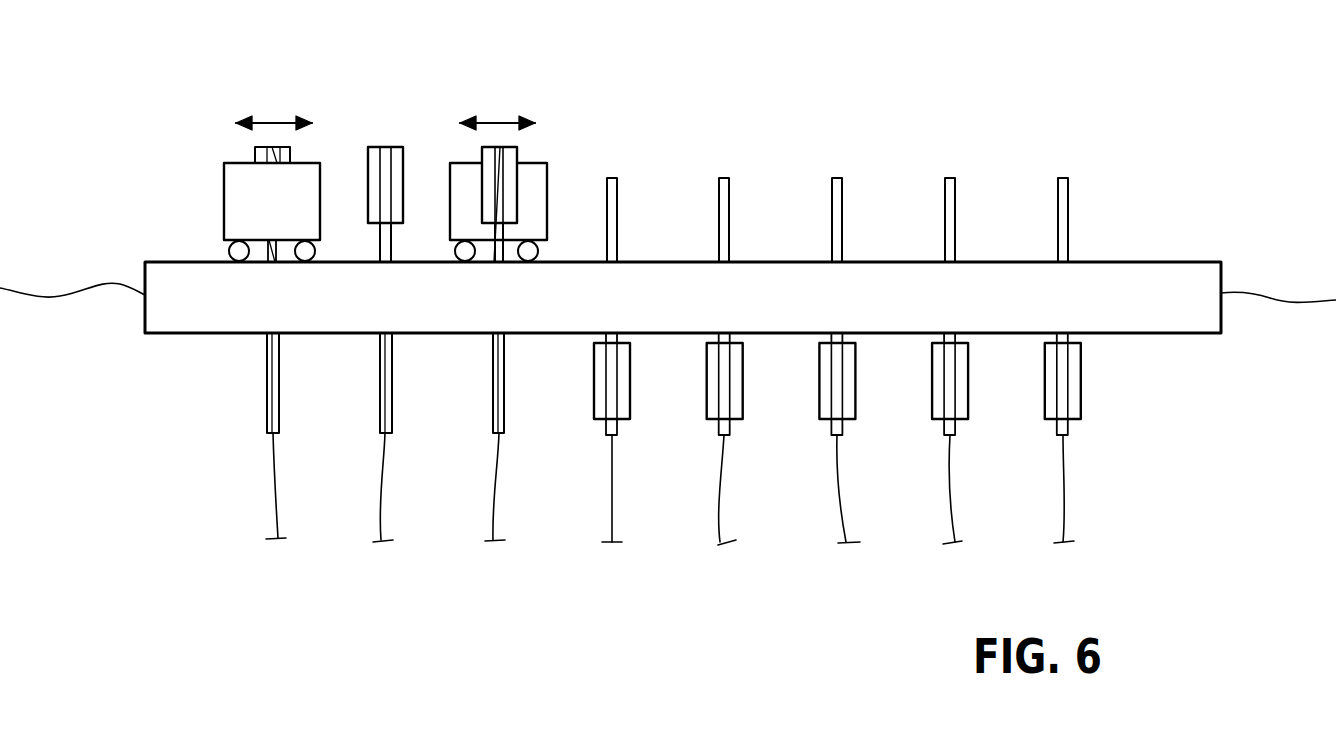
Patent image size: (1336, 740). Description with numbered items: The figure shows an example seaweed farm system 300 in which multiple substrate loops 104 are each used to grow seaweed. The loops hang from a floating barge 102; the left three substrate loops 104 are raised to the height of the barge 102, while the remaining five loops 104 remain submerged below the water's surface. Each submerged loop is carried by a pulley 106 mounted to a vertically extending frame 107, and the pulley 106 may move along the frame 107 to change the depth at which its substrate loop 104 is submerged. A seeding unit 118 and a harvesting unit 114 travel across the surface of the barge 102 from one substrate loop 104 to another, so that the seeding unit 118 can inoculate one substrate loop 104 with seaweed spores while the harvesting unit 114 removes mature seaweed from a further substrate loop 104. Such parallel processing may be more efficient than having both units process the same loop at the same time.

The system 300 is at (1073, 84).
The barge 102 is at (1117, 262).
The substrate loop 104 is at (271, 496).
The pulley 106 is at (385, 147).
The frame 107 is at (617, 196).
The harvesting unit 114 is at (540, 163).
The seeding unit 118 is at (290, 211).